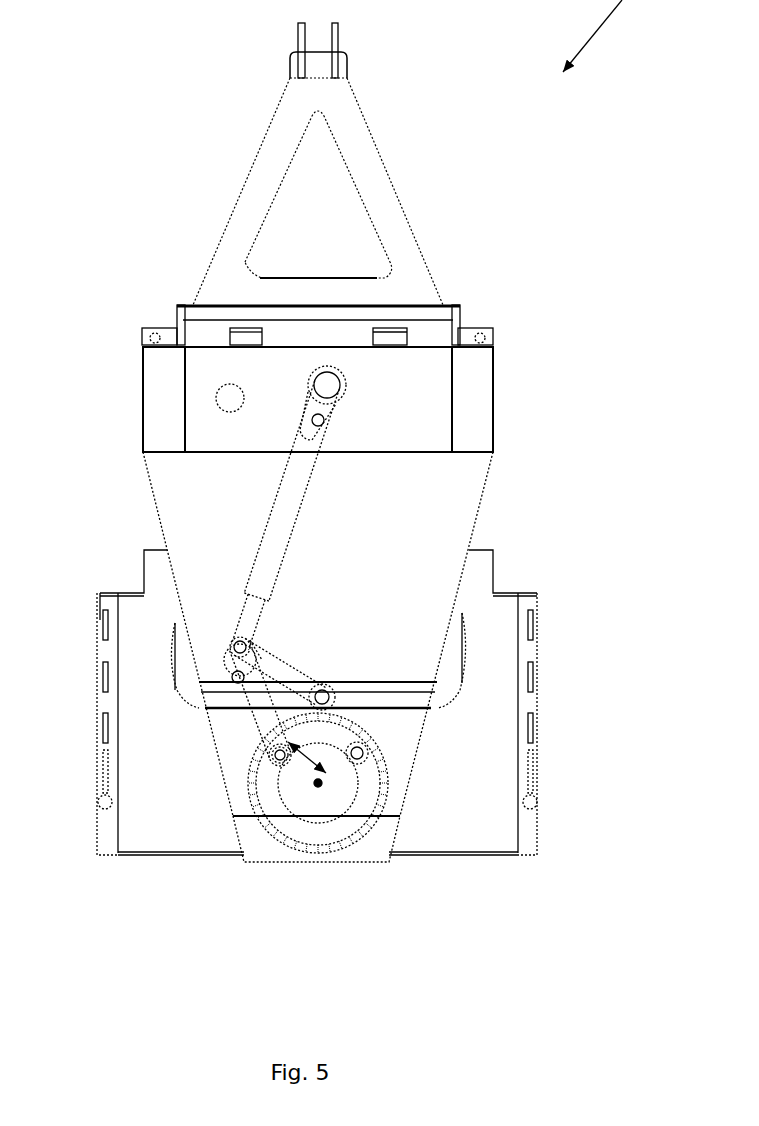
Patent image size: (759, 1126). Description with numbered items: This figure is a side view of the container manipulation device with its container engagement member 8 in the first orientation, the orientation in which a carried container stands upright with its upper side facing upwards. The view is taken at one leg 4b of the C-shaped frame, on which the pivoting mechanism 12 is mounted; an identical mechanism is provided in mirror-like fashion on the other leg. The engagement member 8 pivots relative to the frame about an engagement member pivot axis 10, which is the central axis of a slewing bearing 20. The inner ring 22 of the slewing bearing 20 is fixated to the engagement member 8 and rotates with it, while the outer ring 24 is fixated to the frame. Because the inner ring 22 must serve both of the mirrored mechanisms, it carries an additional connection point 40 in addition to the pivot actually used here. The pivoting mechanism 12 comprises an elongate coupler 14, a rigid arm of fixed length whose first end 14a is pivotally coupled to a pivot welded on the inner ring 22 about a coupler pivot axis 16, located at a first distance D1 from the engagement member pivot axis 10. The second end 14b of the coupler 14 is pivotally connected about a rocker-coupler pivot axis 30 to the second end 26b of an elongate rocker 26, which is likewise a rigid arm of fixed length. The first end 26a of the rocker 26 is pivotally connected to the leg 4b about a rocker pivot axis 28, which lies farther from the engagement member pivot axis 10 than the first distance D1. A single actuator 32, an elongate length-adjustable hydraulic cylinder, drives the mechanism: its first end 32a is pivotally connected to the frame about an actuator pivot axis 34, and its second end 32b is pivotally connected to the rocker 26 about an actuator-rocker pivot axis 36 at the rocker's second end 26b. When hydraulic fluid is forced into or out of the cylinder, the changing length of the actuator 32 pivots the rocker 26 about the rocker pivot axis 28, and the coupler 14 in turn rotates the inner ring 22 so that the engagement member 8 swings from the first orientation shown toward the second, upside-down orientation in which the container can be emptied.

The leg 4b is at (447, 504).
The container engagement member 8 is at (482, 673).
The engagement member pivot axis 10 is at (318, 783).
The pivoting mechanism 12 is at (315, 605).
The coupler 14 is at (253, 722).
The first end of the coupler 14a is at (265, 762).
The second end of the coupler 14b is at (230, 693).
The coupler pivot axis 16 is at (278, 760).
The slewing bearing 20 is at (392, 763).
The inner ring 22 is at (368, 796).
The outer ring 24 is at (393, 778).
The rocker 26 is at (300, 686).
The first end of the rocker 26a is at (326, 678).
The second end of the rocker 26b is at (268, 655).
The rocker pivot axis 28 is at (335, 690).
The rocker-coupler pivot axis 30 is at (237, 673).
The actuator 32 is at (273, 517).
The first end of the actuator 32a is at (350, 417).
The second end of the actuator 32b is at (224, 620).
The actuator pivot axis 34 is at (313, 417).
The actuator-rocker pivot axis 36 is at (240, 642).
The additional connection point 40 is at (360, 748).
The first distance D1 is at (305, 745).